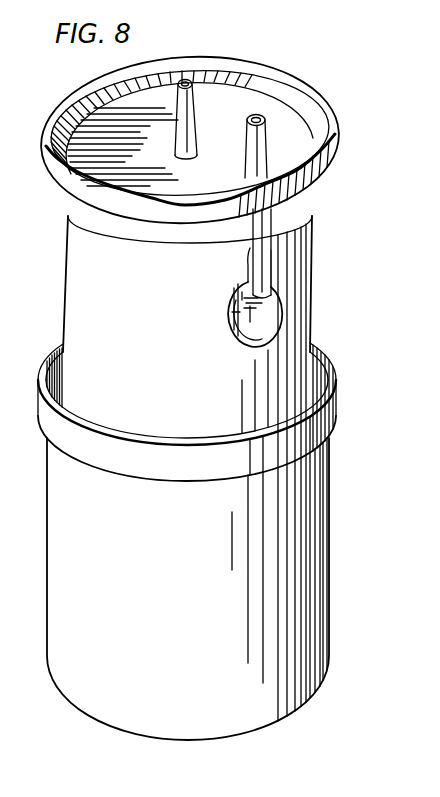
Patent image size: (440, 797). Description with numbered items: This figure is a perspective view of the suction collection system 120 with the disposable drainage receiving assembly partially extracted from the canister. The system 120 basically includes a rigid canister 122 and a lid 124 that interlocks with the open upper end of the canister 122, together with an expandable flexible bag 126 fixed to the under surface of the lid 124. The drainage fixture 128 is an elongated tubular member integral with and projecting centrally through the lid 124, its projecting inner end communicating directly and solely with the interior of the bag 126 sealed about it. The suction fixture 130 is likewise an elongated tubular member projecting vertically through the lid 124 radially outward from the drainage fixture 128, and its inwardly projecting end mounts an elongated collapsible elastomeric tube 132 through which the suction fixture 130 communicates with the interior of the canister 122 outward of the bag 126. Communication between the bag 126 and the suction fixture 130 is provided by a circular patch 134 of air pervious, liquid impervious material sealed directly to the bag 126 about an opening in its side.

The suction collection system 120 is at (318, 239).
The rigid canister 122 is at (315, 522).
The lid 124 is at (299, 83).
The expandable flexible bag 126 is at (306, 350).
The drainage fixture 128 is at (178, 124).
The suction fixture 130 is at (246, 158).
The collapsible elastomeric tube 132 is at (253, 253).
The patch 134 is at (234, 325).